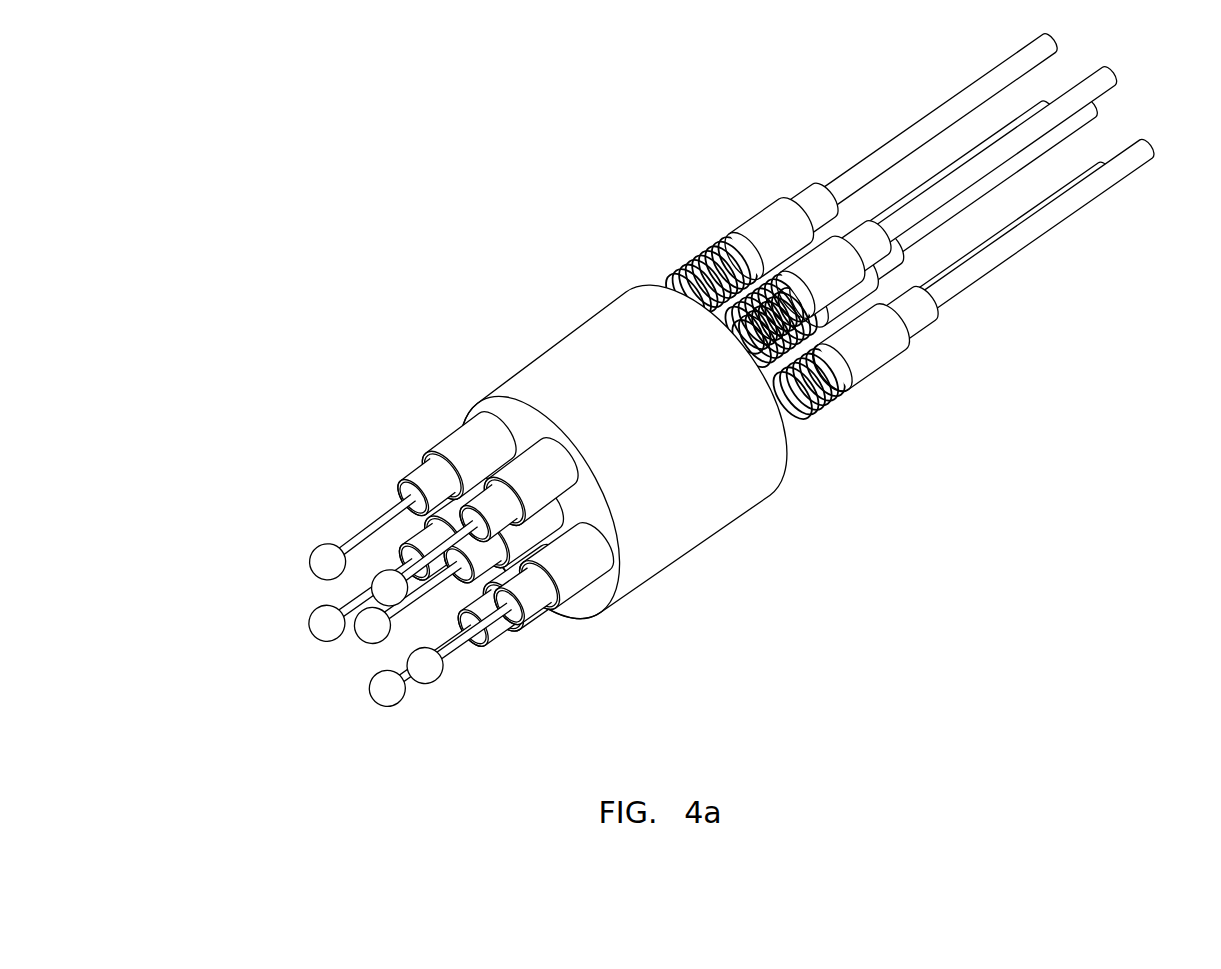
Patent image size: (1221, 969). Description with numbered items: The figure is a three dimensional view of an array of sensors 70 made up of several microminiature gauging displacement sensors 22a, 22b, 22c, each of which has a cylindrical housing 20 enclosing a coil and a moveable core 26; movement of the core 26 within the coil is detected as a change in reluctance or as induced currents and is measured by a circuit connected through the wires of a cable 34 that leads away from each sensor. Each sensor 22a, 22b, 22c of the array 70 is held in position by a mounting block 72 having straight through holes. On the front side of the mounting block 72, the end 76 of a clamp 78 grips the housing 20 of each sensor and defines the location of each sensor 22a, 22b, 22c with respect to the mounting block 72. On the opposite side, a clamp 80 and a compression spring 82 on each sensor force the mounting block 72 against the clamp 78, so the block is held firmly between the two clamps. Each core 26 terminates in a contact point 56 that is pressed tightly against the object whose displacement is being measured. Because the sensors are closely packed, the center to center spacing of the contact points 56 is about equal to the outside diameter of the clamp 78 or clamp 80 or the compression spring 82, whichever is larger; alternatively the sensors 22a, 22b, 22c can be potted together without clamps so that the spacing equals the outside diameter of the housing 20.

The cylindrical housing 20 is at (805, 203).
The microminiature gauging displacement sensor 22a is at (378, 733).
The displacement sensor 22b is at (457, 695).
The displacement sensor 22c is at (352, 665).
The moveable core 26 is at (370, 528).
The cable 34 is at (1082, 197).
The contact point 56 is at (322, 557).
The array of sensors 70 is at (950, 368).
The mounting block 72 is at (699, 483).
The end of clamp 76 is at (455, 428).
The clamp 78 is at (452, 447).
The clamp 80 is at (743, 237).
The compression spring 82 is at (699, 256).